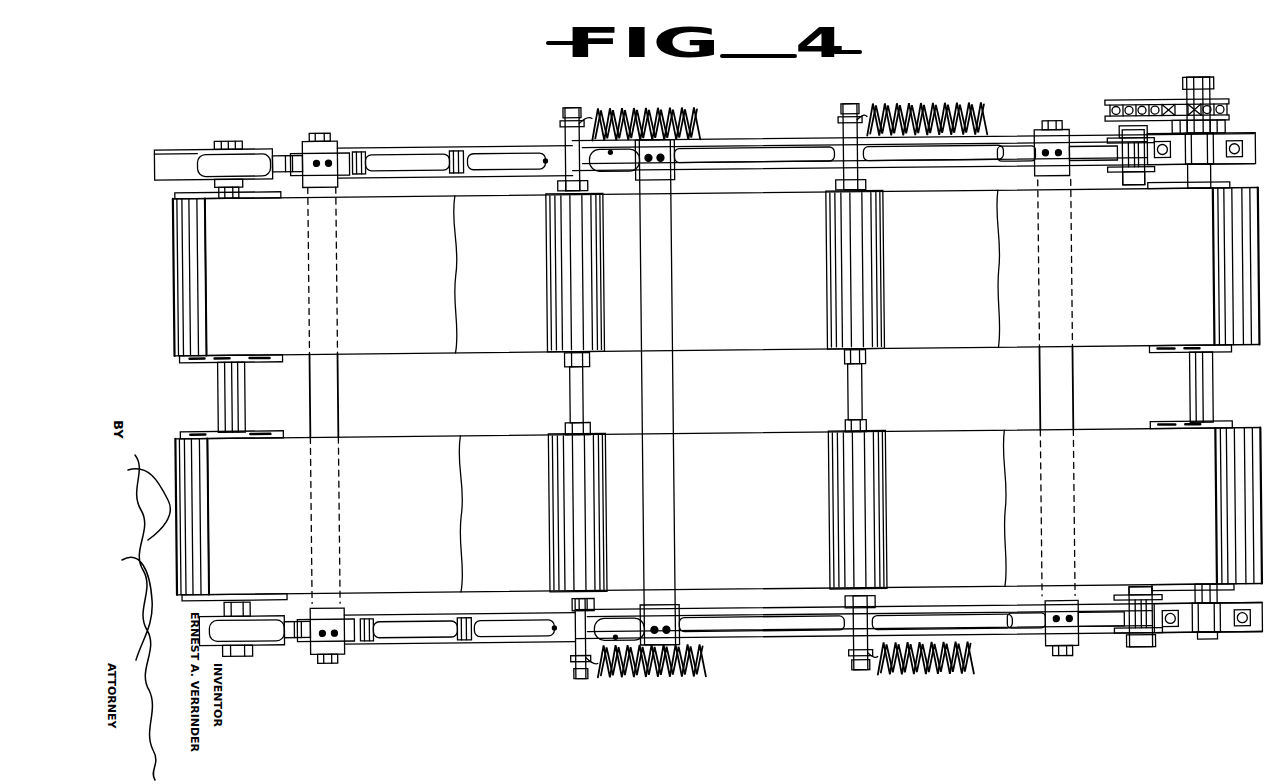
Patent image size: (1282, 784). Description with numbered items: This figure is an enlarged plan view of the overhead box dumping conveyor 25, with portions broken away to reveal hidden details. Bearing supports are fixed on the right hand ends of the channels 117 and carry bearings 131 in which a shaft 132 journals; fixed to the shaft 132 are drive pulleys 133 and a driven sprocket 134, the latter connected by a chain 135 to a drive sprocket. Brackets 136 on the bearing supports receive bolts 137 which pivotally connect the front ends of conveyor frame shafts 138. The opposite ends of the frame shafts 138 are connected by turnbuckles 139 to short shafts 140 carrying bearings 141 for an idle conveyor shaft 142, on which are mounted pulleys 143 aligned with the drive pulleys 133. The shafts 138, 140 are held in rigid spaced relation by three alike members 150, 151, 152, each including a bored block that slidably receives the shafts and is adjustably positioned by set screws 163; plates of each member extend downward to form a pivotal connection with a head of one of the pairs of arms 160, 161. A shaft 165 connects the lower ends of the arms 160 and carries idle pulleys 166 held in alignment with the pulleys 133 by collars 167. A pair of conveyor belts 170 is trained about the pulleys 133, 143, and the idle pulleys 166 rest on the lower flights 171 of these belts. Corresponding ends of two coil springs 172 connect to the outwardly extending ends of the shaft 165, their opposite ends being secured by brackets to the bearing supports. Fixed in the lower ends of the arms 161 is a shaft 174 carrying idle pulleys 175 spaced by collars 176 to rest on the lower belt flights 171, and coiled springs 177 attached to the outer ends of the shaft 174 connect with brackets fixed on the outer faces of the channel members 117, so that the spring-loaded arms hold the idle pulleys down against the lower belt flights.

The overhead box dumping conveyor 25 is at (431, 132).
The channels 117 is at (175, 158).
The bearings 131 is at (1203, 172).
The shaft 132 is at (1195, 390).
The drive pulleys 133 is at (1182, 352).
The driven sprocket 134 is at (1198, 86).
The chain 135 is at (1160, 104).
The brackets 136 is at (1130, 175).
The bolts 137 is at (1142, 192).
The conveyor frame shafts 138 is at (500, 155).
The turnbuckles 139 is at (432, 172).
The short shafts 140 is at (318, 148).
The bearings 141 is at (228, 155).
The idle conveyor shaft 142 is at (218, 392).
The pulleys 143 is at (250, 428).
The member 150 is at (1040, 367).
The member 151 is at (673, 367).
The member 152 is at (340, 367).
The arms 160 is at (968, 167).
The arms 161 is at (612, 158).
The set screws 163 is at (331, 165).
The shaft 165 is at (863, 390).
The idle pulleys 166 is at (880, 285).
The collars 167 is at (846, 425).
The conveyor belts 170 is at (763, 284).
The lower flights 171 is at (960, 450).
The coil springs 172 is at (993, 108).
The shaft 174 is at (570, 395).
The idle pulleys 175 is at (572, 272).
The collars 176 is at (565, 188).
The coiled springs 177 is at (692, 110).